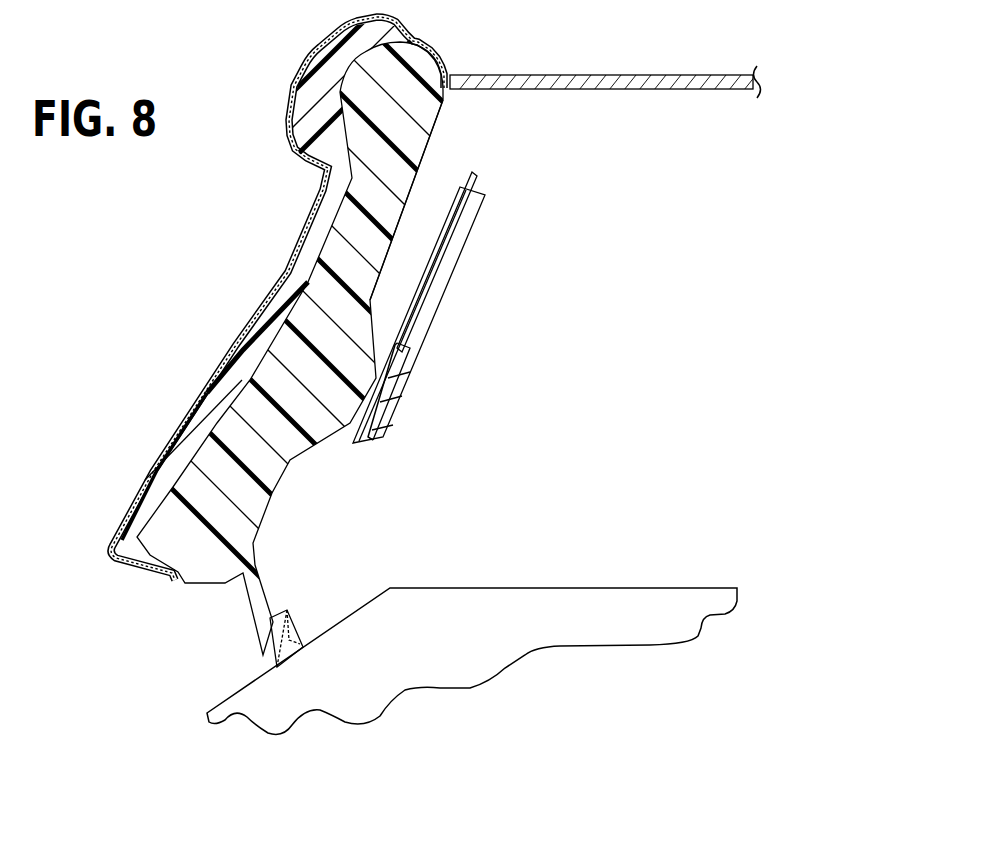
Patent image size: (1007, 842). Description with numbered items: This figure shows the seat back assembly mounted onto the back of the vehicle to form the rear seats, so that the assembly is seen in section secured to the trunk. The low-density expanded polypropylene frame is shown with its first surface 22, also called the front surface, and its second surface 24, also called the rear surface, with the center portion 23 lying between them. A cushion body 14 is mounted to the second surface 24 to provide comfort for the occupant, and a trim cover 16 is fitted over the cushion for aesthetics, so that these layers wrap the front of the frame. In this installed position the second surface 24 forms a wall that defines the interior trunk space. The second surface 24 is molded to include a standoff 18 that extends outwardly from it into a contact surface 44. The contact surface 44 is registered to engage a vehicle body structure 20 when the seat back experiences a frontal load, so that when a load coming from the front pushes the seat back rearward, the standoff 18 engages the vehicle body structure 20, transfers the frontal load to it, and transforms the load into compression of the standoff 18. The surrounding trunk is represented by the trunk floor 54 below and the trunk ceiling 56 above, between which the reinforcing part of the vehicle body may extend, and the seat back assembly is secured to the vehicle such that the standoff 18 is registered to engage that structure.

The cushion body 14 is at (245, 352).
The trim cover 16 is at (287, 253).
The standoff 18 is at (320, 428).
The vehicle body structure 20 is at (413, 343).
The first surface 22 is at (220, 418).
The center portion 23 is at (400, 127).
The second surface 24 is at (425, 152).
The contact surface 44 is at (380, 352).
The trunk floor 54 is at (584, 587).
The trunk ceiling 56 is at (617, 74).